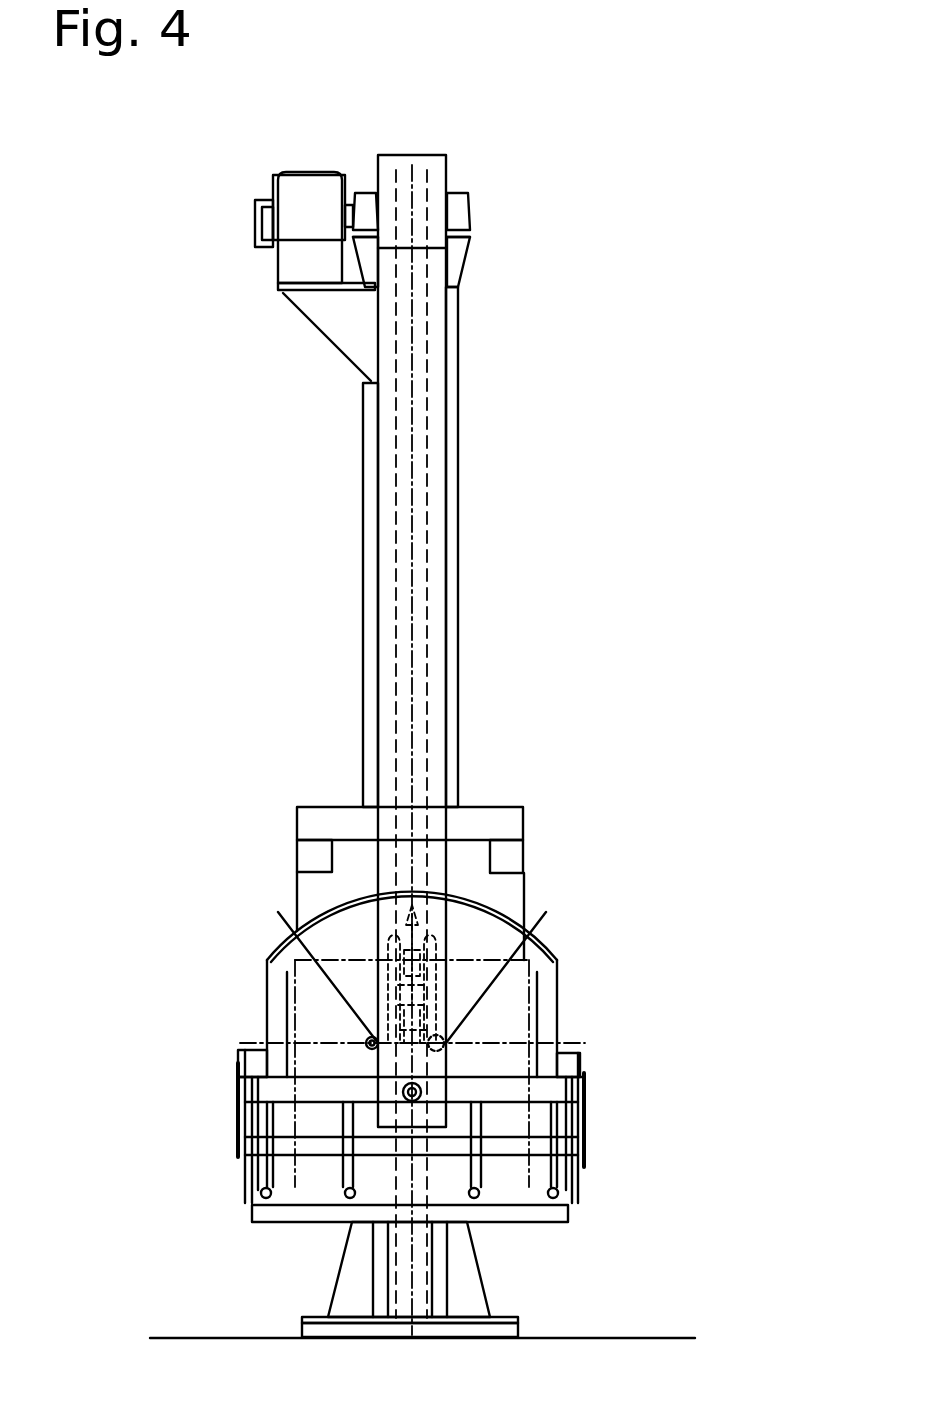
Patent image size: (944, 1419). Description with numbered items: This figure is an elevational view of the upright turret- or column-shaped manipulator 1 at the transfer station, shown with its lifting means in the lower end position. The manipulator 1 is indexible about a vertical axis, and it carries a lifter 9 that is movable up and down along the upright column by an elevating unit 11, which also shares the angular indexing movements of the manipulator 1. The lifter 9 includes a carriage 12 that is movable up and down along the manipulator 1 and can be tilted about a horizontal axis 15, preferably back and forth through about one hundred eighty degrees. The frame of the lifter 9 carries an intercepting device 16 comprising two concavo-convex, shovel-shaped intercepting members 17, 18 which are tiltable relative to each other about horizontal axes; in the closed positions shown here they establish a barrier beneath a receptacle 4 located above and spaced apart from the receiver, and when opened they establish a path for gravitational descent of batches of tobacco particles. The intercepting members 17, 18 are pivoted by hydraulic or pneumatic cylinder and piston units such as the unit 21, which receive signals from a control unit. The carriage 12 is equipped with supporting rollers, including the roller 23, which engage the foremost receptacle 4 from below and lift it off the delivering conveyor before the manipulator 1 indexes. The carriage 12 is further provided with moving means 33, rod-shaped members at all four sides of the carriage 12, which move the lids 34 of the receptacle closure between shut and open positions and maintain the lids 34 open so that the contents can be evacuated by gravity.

The manipulator 1 is at (490, 571).
The receptacle 4 is at (527, 1178).
The lifter 9 is at (481, 795).
The elevating unit 11 is at (393, 298).
The carriage 12 is at (545, 1093).
The horizontal axis 15 is at (420, 1088).
The intercepting device 16 is at (303, 893).
The intercepting member 17 is at (297, 907).
The intercepting member 18 is at (529, 934).
The cylinder and piston unit 21 is at (414, 997).
The supporting roller 23 is at (535, 1215).
The moving means 33 is at (348, 1199).
The lid 34 is at (292, 1002).